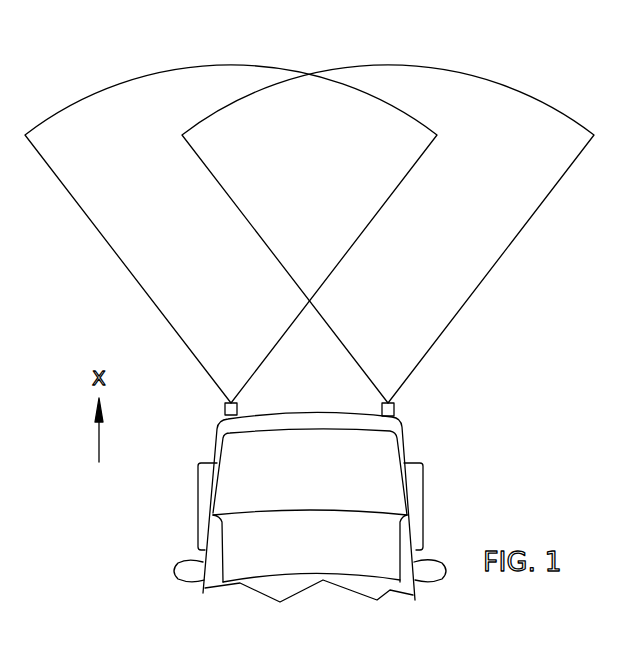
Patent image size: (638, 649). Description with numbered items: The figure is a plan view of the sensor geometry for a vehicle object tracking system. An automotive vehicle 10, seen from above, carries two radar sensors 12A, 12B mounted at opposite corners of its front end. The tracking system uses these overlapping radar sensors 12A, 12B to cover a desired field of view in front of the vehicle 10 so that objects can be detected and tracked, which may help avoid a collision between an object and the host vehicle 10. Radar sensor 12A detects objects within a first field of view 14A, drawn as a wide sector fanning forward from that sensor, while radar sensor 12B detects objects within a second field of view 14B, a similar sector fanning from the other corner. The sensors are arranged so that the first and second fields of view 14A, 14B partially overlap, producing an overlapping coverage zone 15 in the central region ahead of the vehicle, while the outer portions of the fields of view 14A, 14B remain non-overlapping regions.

The automotive vehicle 10 is at (407, 433).
The radar sensor 12A is at (224, 409).
The radar sensor 12B is at (395, 408).
The first field of view 14A is at (85, 213).
The second field of view 14B is at (543, 200).
The overlapping coverage zone 15 is at (313, 86).